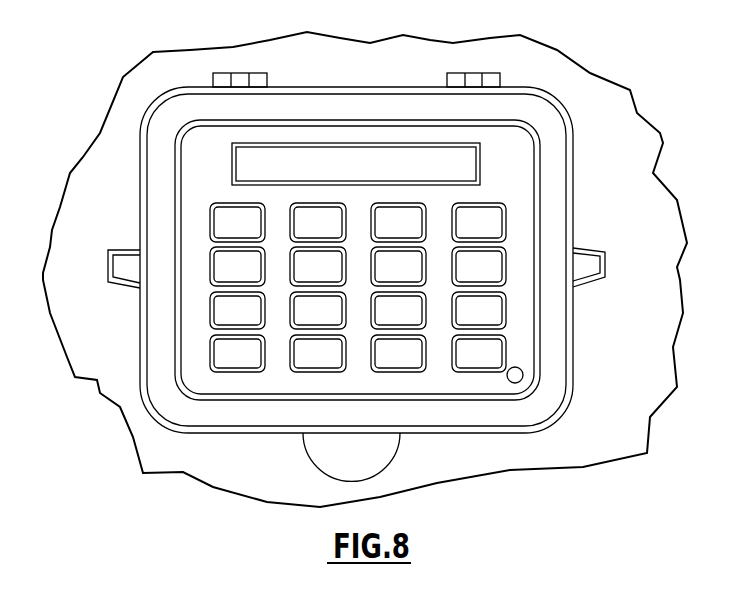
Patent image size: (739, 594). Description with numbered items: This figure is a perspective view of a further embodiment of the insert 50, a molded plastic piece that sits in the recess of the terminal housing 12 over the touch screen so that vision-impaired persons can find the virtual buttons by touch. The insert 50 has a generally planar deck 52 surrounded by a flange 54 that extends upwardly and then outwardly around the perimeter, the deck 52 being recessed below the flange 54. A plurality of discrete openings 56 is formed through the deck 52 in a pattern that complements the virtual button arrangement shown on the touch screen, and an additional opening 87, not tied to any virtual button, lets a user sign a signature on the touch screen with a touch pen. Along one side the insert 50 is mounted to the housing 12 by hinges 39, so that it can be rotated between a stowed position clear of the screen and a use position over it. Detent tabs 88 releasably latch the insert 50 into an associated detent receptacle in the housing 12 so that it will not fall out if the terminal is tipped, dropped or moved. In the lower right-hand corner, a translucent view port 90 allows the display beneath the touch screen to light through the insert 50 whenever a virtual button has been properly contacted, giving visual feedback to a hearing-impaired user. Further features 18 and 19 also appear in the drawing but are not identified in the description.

The housing 12 is at (103, 133).
The mounting clips 18 is at (108, 279).
The cable connector 19 is at (393, 452).
The hinges 39 is at (262, 73).
The insert 50 is at (110, 433).
The deck 52 is at (520, 313).
The flange 54 is at (574, 215).
The discrete openings 56 is at (232, 220).
The opening 87 is at (416, 177).
The detent tabs 88 is at (128, 263).
The view port 90 is at (522, 382).